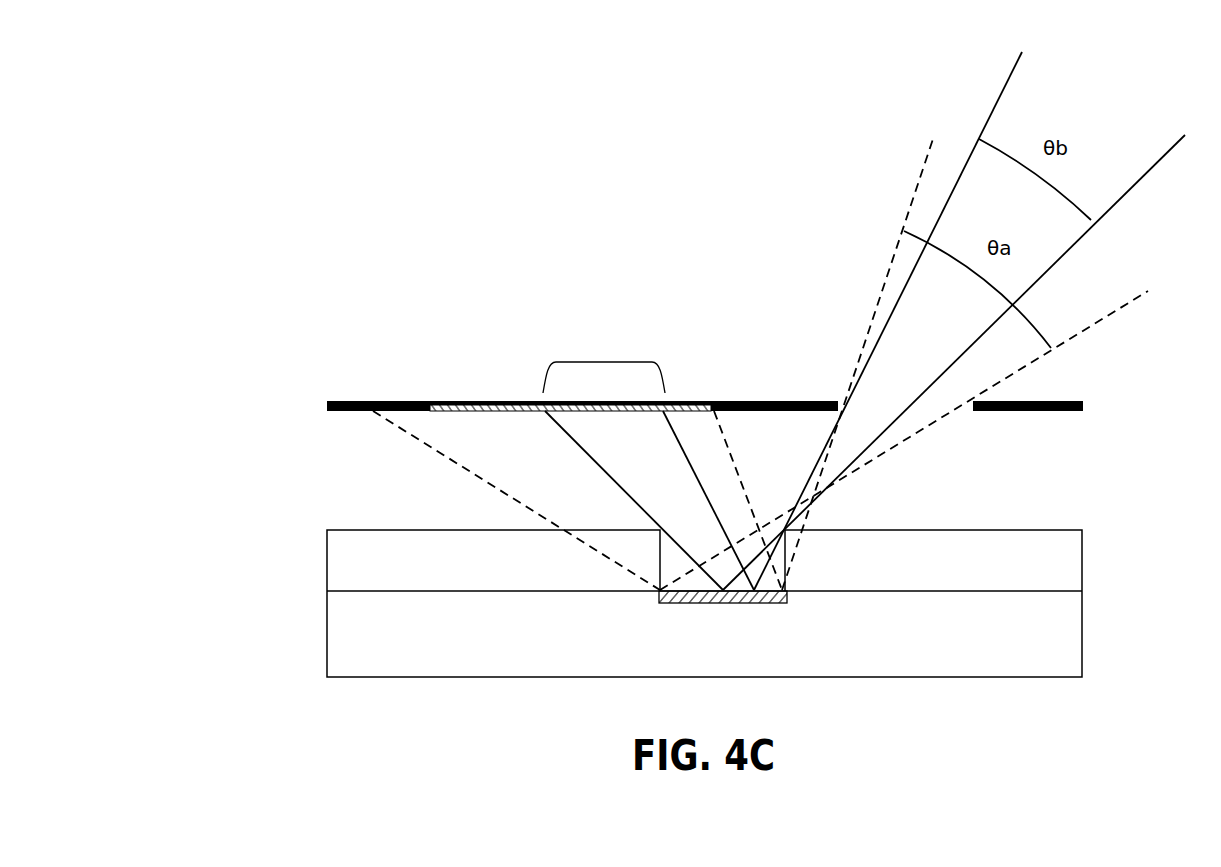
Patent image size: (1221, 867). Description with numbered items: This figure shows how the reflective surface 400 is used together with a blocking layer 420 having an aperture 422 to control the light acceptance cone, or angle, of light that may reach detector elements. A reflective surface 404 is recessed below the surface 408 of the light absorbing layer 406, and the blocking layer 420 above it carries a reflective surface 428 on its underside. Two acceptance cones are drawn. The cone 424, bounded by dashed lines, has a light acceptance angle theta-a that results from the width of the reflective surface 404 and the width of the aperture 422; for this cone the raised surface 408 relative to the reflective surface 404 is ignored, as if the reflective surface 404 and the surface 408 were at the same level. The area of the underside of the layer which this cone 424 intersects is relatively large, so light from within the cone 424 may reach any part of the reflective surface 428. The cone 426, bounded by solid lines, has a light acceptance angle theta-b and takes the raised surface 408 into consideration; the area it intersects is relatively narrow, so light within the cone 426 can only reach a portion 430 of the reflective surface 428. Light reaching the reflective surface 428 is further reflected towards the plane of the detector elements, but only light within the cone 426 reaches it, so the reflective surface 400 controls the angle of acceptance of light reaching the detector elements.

The reflective surface 400 is at (603, 583).
The reflective surface 404 is at (692, 605).
The light absorbing layer 406 is at (306, 530).
The surface 408 is at (953, 530).
The blocking layer 420 is at (328, 397).
The aperture 422 is at (955, 432).
The cone 424 is at (880, 296).
The cone 426 is at (1050, 268).
The reflective surface 428 is at (455, 412).
The portion 430 is at (604, 361).